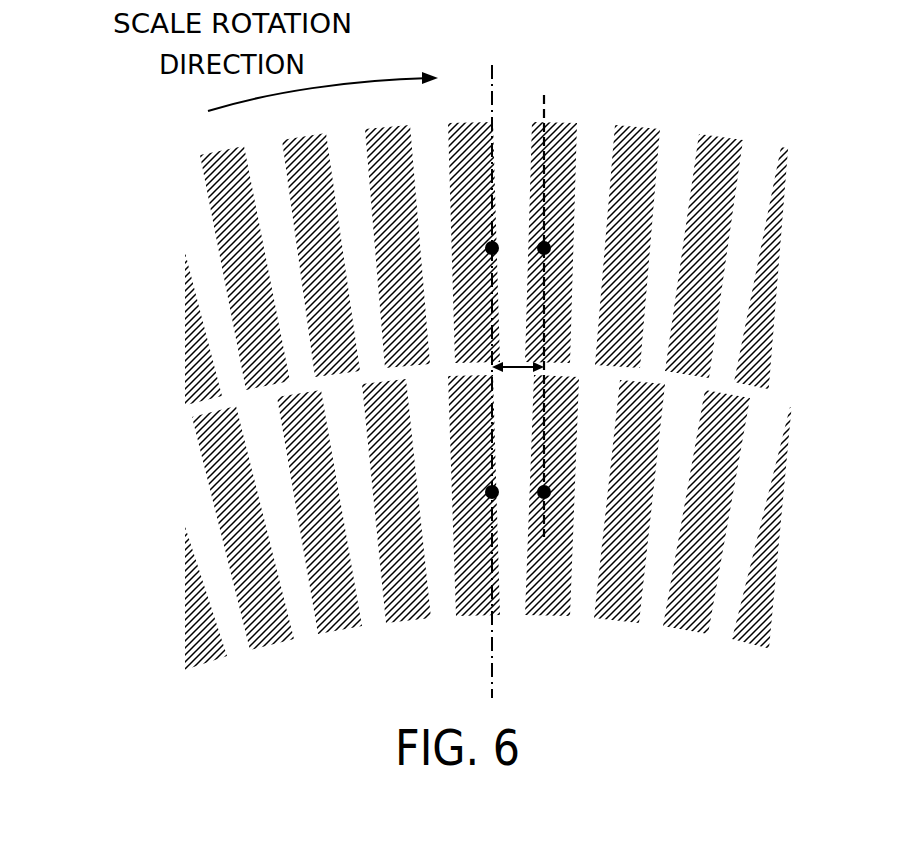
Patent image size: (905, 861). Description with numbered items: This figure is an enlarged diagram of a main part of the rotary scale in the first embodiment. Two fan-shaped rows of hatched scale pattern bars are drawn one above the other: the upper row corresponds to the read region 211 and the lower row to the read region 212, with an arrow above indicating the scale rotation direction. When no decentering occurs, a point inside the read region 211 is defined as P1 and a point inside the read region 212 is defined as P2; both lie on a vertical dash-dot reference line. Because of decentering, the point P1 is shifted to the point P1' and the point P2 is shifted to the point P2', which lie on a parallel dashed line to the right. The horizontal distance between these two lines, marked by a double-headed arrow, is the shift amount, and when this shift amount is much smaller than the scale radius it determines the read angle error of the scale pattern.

The read region 211 is at (187, 190).
The read region 212 is at (198, 497).
The point inside read region 211 P1 is at (521, 138).
The shifted point P1' is at (609, 138).
The point inside read region 212 P2 is at (518, 593).
The shifted point P2' is at (579, 593).